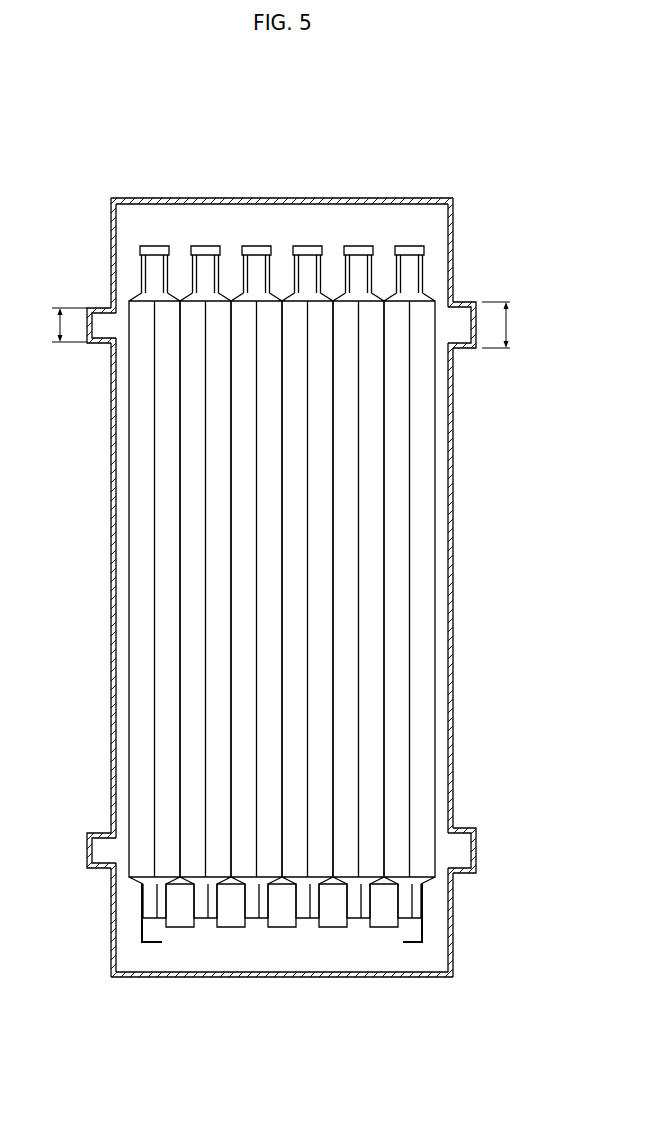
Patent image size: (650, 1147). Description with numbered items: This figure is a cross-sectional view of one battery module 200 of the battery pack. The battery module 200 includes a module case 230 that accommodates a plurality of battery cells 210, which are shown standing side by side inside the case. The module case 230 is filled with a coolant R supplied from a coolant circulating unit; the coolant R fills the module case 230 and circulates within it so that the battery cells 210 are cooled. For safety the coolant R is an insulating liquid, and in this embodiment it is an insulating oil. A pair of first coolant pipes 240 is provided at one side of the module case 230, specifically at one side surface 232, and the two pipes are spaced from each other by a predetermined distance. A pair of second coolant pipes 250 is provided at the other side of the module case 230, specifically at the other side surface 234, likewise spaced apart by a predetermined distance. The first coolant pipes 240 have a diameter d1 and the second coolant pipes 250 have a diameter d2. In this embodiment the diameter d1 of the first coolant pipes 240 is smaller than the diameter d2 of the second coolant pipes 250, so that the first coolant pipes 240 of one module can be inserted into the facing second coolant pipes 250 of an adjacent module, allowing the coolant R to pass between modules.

The battery module 200 is at (138, 124).
The module case 230 is at (320, 200).
The coolant R is at (396, 214).
The one side surface 232 is at (112, 403).
The other side surface 234 is at (455, 403).
The first coolant pipes 240 is at (100, 307).
The second coolant pipes 250 is at (465, 304).
The battery cell 210 is at (142, 450).
The diameter of the first coolant pipes d1 is at (59, 325).
The diameter of the second coolant pipes d2 is at (508, 325).